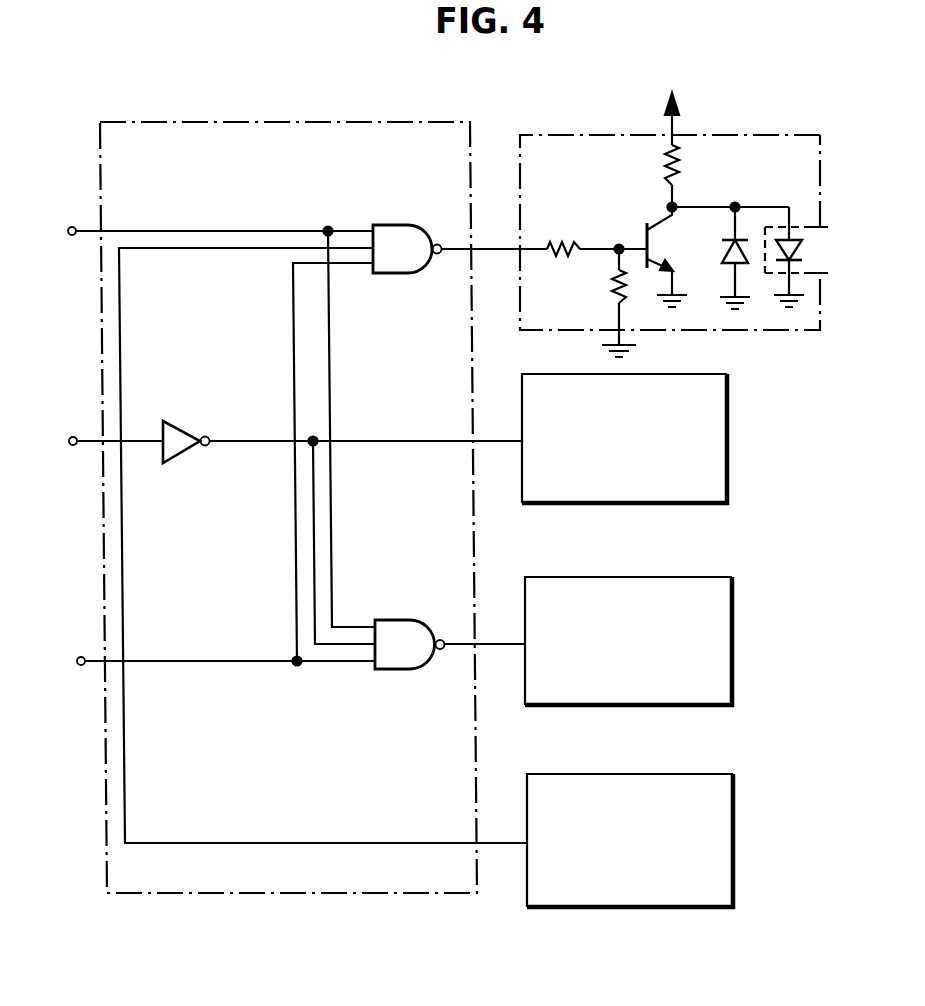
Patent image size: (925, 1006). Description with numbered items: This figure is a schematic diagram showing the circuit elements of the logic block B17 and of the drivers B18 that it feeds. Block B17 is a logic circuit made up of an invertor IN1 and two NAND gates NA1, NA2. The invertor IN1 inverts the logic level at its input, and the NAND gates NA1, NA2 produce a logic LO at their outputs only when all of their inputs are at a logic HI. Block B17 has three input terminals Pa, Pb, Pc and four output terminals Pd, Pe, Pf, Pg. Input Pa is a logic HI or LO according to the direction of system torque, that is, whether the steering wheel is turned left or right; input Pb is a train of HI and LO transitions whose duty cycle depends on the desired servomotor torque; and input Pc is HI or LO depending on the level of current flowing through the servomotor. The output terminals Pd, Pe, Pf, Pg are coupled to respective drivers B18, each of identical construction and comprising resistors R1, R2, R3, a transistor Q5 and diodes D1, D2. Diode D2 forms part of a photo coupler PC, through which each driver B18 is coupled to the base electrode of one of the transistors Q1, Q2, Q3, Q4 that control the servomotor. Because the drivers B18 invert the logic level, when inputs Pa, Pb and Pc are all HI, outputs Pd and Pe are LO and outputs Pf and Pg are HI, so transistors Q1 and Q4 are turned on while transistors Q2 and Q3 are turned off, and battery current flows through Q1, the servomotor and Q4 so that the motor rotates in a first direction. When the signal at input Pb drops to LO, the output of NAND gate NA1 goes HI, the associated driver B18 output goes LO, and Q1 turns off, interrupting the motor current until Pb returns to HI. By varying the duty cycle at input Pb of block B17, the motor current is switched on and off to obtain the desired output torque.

The logic circuit block B17 is at (270, 121).
The driver B18 is at (770, 134).
The NAND gate NA1 is at (400, 224).
The NAND gate NA2 is at (411, 619).
The invertor IN1 is at (186, 420).
The resistor R1 is at (576, 241).
The resistor R2 is at (616, 284).
The resistor R3 is at (667, 156).
The transistor Q5 is at (667, 255).
The diode D1 is at (724, 252).
The diode D2 is at (790, 238).
The photo coupler PC is at (812, 222).
The transistor Q1 is at (810, 252).
The transistor Q2 is at (740, 838).
The transistor Q3 is at (738, 641).
The transistor Q4 is at (738, 438).
The input terminal Pa is at (99, 441).
The input terminal Pb is at (205, 422).
The input terminal Pc is at (207, 470).
The output terminal Pd is at (494, 231).
The output terminal Pe is at (366, 525).
The output terminal Pf is at (485, 626).
The output terminal Pg is at (323, 545).